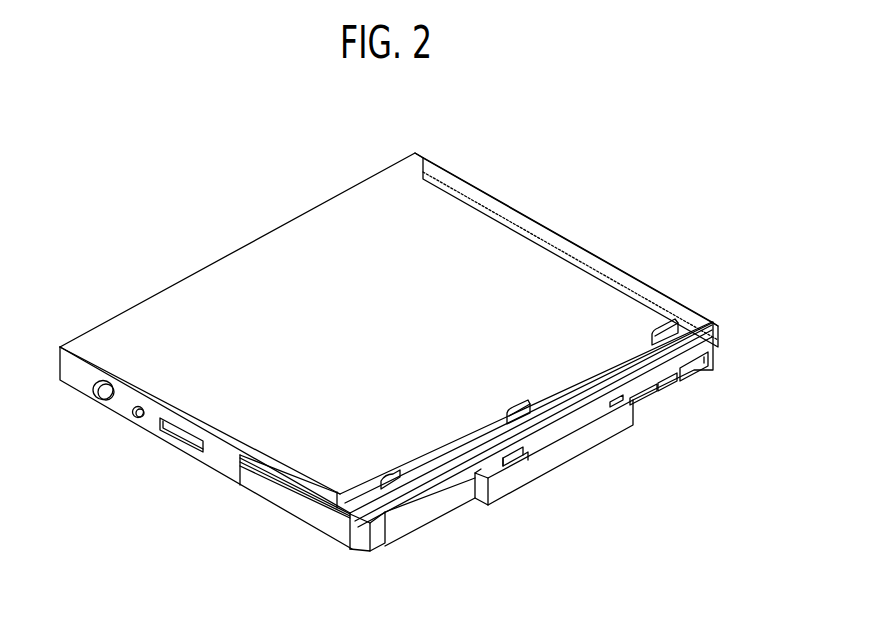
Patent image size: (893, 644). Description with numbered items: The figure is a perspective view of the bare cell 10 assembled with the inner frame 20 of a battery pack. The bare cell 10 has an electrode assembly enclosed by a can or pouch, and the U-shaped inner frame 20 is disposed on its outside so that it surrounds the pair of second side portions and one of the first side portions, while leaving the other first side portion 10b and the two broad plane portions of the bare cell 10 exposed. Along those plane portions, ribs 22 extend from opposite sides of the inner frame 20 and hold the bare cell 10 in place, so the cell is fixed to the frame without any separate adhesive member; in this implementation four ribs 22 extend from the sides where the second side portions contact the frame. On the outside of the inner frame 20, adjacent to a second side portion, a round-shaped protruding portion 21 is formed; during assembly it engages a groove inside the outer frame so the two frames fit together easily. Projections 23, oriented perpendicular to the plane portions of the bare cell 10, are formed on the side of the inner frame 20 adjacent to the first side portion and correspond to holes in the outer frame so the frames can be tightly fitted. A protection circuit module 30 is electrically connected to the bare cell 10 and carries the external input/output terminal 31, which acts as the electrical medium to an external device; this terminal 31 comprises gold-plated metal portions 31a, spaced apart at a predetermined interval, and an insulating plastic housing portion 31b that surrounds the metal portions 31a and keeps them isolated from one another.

The bare cell 10 is at (533, 274).
The first side portion 10b is at (208, 262).
The inner frame 20 is at (65, 370).
The protruding portion 21 is at (137, 421).
The rib 22 is at (446, 178).
The projection 23 is at (353, 493).
The protection circuit module 30 is at (545, 462).
The external input/output terminal 31 is at (730, 367).
The metal portion 31a is at (716, 366).
The housing portion 31b is at (710, 402).